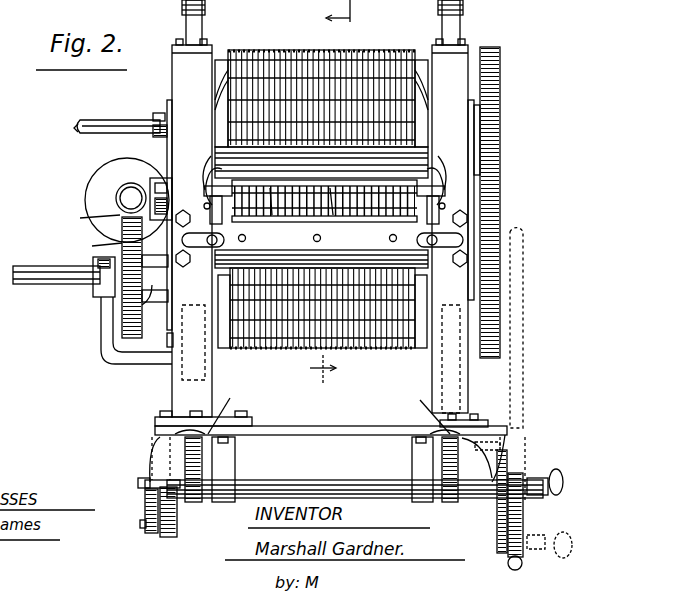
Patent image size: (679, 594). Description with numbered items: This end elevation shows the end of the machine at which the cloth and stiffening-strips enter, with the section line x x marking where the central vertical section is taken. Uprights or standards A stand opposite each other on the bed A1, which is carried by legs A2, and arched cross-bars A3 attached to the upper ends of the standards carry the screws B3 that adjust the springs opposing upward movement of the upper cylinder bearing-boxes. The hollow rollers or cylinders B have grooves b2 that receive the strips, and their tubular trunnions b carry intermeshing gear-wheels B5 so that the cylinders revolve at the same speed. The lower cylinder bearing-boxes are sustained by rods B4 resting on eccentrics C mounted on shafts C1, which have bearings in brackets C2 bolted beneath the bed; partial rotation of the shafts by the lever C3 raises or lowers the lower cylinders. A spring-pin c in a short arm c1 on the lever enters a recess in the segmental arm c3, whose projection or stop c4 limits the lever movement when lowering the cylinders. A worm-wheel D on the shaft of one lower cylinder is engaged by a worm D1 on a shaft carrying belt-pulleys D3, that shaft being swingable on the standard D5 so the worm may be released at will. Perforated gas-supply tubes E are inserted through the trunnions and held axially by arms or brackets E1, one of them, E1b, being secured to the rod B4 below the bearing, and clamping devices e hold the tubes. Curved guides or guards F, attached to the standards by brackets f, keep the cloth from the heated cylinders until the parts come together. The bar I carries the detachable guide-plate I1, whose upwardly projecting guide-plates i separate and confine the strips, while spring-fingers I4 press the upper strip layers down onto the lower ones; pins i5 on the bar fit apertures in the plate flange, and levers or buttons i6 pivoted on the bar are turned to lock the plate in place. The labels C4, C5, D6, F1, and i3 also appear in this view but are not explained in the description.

The upright or standard A is at (320, 228).
The bed A1 is at (331, 419).
The leg A2 is at (152, 444).
The arched cross-bar A3 is at (202, 24).
The roller or cylinder B is at (256, 52).
The groove b2 is at (286, 52).
The screw B3 is at (172, 305).
The rod B4 is at (317, 409).
The gear-wheel B5 is at (500, 97).
The eccentric C is at (451, 466).
The shaft C1 is at (348, 487).
The bracket C2 is at (235, 462).
The lever C3 is at (523, 520).
The shaft C4 is at (145, 526).
The gear C5 is at (160, 478).
The spring-pin c is at (543, 497).
The short arm c1 is at (545, 480).
The segmental arm c3 is at (497, 514).
The projection or stop c4 is at (510, 563).
The worm-wheel D is at (99, 245).
The worm D1 is at (118, 194).
The belt-pulley D3 is at (160, 140).
The standard D5 is at (131, 198).
The disk rim D6 is at (93, 217).
The trunnion b is at (145, 277).
The gas-supply tube E is at (135, 120).
The arm or bracket E1 is at (78, 280).
The arm or bracket E1b is at (162, 113).
The clamping device e is at (98, 259).
The curved guide or guard F is at (321, 162).
The lower shaft F1 is at (321, 259).
The bar I is at (324, 213).
The guide-plate I1 is at (204, 194).
The spring-finger I4 is at (274, 214).
The guide-plate i is at (339, 213).
The spring i3 is at (321, 185).
The pin i5 is at (323, 238).
The lever or button i6 is at (205, 247).
The bracket or arm f is at (321, 168).
The section line x is at (333, 197).